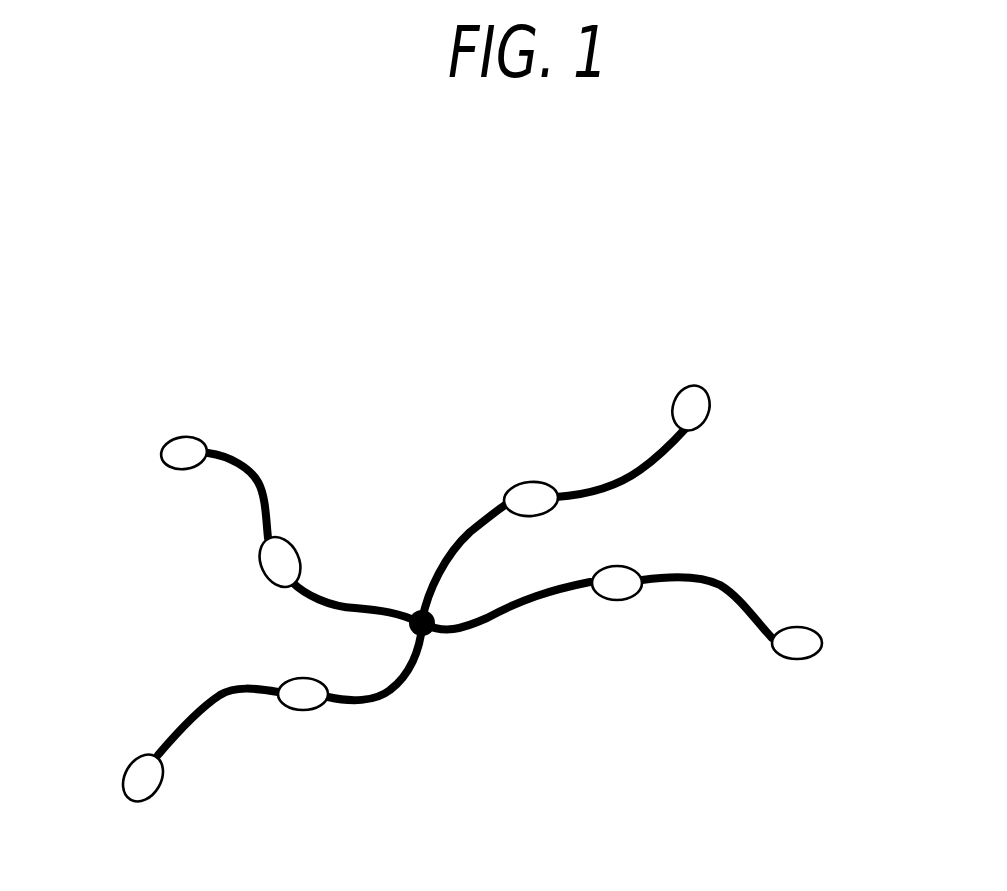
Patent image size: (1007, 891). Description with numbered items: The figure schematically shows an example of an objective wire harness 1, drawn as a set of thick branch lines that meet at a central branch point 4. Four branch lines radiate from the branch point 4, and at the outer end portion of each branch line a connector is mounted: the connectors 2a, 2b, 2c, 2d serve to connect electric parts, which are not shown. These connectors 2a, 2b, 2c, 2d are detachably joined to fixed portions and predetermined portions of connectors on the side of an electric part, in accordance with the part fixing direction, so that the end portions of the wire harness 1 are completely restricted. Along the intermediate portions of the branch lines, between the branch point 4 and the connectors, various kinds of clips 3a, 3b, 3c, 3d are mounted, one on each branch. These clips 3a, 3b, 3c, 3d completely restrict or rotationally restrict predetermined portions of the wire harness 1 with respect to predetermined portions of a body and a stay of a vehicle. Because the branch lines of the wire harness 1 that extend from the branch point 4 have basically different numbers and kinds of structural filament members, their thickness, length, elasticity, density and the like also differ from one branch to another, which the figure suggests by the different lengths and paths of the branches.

The wire harness 1 is at (268, 469).
The connector 2a is at (188, 437).
The connector 2b is at (810, 628).
The connector 2c is at (710, 409).
The connector 2d is at (124, 799).
The clip 3a is at (292, 552).
The clip 3b is at (628, 566).
The clip 3c is at (526, 483).
The clip 3d is at (303, 712).
The branch point 4 is at (430, 636).